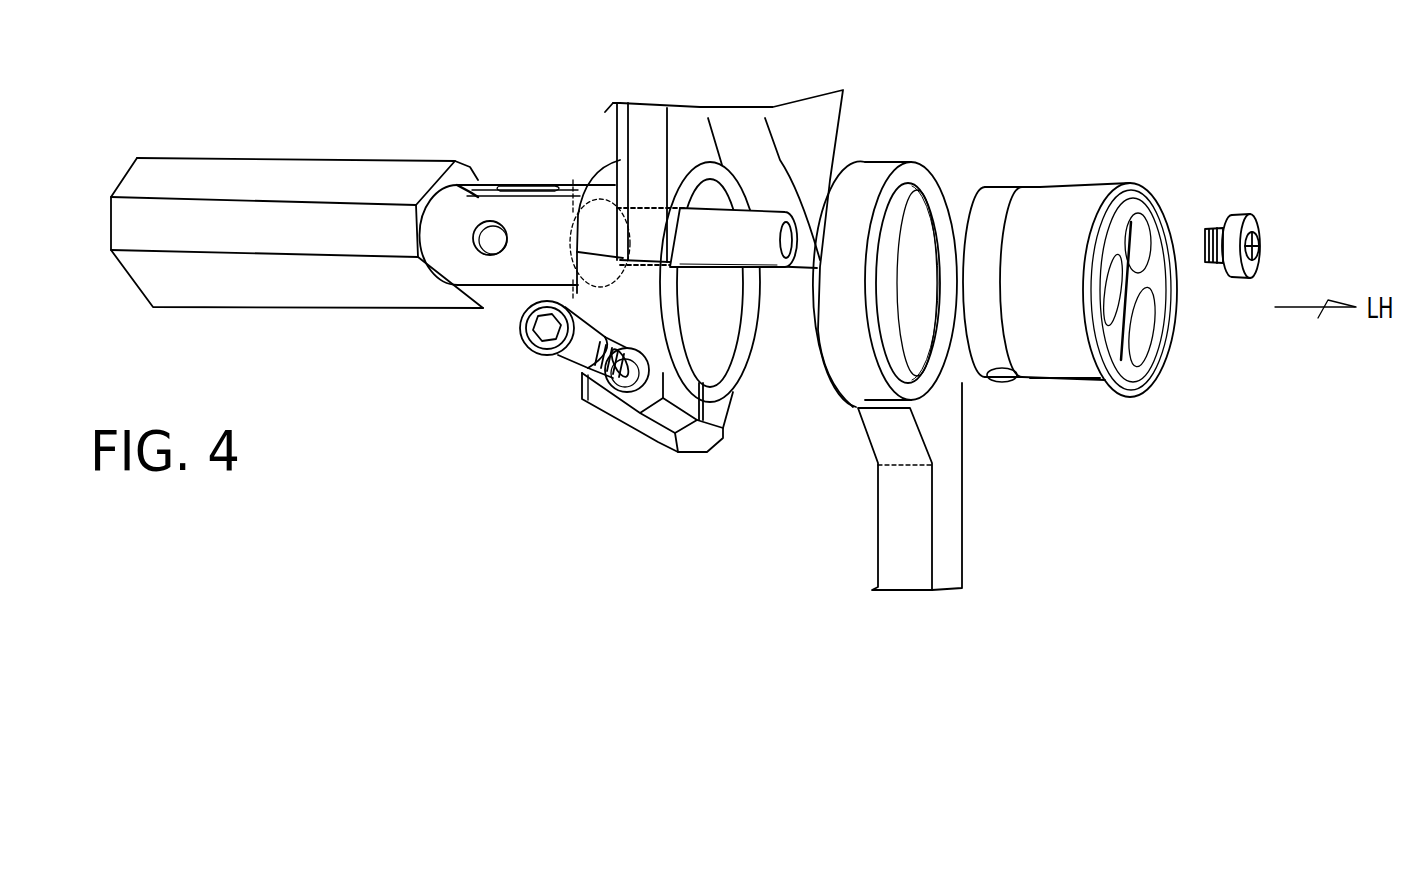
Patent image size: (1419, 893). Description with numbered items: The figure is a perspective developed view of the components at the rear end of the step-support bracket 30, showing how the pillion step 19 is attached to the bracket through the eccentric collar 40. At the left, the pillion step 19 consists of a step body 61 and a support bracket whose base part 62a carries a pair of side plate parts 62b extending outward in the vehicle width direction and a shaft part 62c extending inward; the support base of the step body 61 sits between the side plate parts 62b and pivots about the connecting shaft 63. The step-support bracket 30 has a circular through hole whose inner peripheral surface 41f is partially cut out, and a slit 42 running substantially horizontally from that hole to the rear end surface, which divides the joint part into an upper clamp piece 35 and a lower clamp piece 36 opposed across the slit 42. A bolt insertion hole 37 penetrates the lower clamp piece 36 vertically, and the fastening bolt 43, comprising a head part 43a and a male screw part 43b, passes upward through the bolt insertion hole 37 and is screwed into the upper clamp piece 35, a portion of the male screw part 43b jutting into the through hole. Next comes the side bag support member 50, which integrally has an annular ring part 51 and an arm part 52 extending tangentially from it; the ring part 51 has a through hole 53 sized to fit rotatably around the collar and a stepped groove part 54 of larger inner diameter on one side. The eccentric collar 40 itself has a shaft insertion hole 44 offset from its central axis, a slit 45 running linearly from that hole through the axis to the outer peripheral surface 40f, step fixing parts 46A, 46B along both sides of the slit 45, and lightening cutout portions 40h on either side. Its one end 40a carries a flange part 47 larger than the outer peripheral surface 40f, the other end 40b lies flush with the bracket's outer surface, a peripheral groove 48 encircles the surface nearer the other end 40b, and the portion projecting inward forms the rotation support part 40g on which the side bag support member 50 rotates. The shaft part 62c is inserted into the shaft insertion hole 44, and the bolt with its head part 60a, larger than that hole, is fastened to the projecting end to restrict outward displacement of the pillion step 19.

The pillion step 19 is at (286, 150).
The step body 61 is at (198, 170).
The base part 62a is at (570, 180).
The side plate parts 62b is at (528, 182).
The shaft part 62c is at (720, 227).
The connecting shaft 63 is at (487, 245).
The step-support bracket 30 is at (848, 100).
The inner peripheral surface 41f is at (713, 340).
The upper clamp piece 35 is at (682, 452).
The lower clamp piece 36 is at (628, 420).
The bolt insertion hole 37 is at (603, 393).
The slit 42 is at (657, 440).
The fastening bolt 43 is at (520, 402).
The head part 43a is at (520, 340).
The male screw part 43b is at (573, 370).
The side bag support member 50 is at (968, 552).
The ring part 51 is at (878, 170).
The arm part 52 is at (900, 552).
The through hole 53 is at (908, 200).
The stepped groove part 54 is at (963, 167).
The other end 40b is at (937, 332).
The eccentric collar 40 is at (1119, 281).
The one end 40a is at (1137, 370).
The outer peripheral surface 40f is at (1053, 182).
The rotation support part 40g is at (1095, 185).
The lightening cutout portions 40h is at (1103, 297).
The shaft insertion hole 44 is at (1140, 237).
The slit 45 is at (1100, 390).
The step fixing part 46A is at (1073, 390).
The step fixing part 46B is at (1063, 372).
The flange part 47 is at (1127, 183).
The peripheral groove 48 is at (1003, 207).
The head part 60a is at (1247, 213).